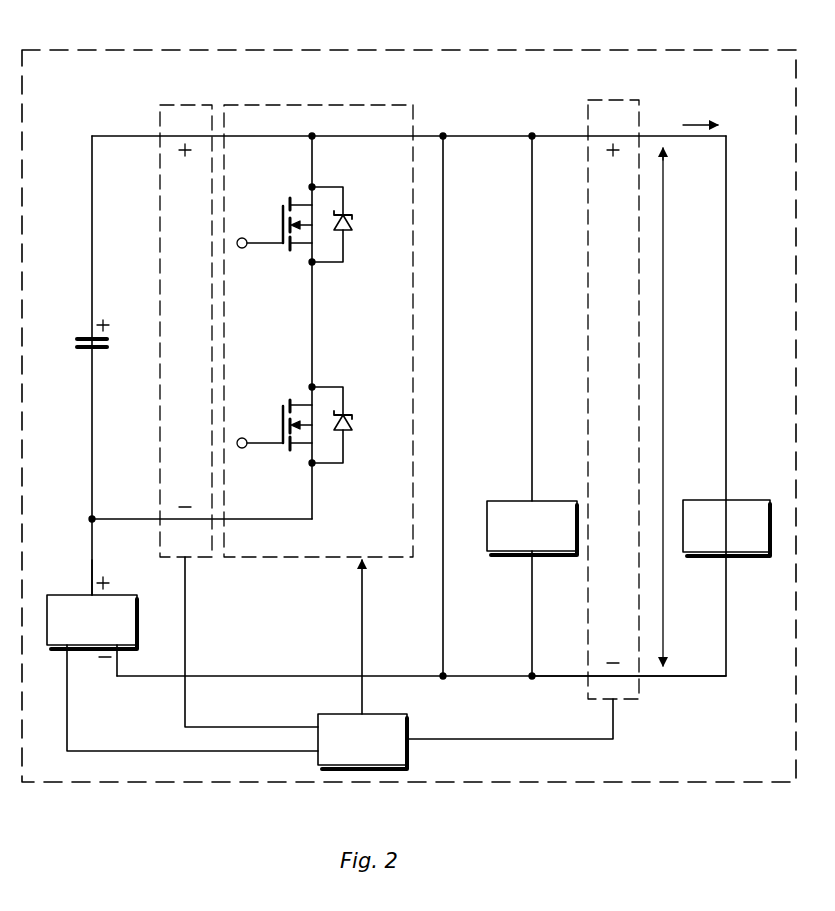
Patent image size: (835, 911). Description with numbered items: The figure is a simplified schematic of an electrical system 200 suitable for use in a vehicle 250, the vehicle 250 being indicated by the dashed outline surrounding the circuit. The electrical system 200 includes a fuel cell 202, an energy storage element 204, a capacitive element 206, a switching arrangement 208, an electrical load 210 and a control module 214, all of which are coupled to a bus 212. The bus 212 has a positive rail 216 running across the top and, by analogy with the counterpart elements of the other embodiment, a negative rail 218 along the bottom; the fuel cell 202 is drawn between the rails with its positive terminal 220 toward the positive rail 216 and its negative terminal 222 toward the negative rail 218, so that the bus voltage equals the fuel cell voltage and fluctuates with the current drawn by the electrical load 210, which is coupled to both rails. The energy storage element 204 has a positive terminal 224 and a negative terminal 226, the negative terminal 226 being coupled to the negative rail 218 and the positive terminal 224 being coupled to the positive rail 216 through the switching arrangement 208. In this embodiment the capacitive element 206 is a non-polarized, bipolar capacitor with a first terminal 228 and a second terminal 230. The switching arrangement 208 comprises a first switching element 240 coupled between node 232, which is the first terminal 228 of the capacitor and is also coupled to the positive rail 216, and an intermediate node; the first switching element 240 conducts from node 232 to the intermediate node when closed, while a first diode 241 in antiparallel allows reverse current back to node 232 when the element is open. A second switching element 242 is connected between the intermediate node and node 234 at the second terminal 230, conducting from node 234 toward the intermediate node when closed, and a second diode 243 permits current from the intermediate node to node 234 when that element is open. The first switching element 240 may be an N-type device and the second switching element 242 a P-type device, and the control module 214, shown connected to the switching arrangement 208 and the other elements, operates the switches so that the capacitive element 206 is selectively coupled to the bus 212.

The electrical system 200 is at (472, 116).
The fuel cell 202 is at (530, 406).
The energy storage element 204 is at (171, 646).
The capacitive element 206 is at (68, 341).
The switching arrangement 208 is at (160, 213).
The electrical load 210 is at (746, 500).
The bus 212 is at (668, 407).
The control module 214 is at (318, 714).
The positive rail 216 is at (690, 138).
The negative output conductor 218 is at (694, 676).
The conductor 220 is at (540, 500).
The conductor 222 is at (535, 553).
The charger positive conductor 224 is at (88, 594).
The charger negative conductor 226 is at (63, 648).
The first terminal 228 is at (92, 337).
The second terminal 230 is at (91, 349).
The node 232 is at (353, 135).
The node 234 is at (288, 520).
The first switching element 240 is at (283, 212).
The first diode 241 is at (346, 212).
The second switching element 242 is at (283, 408).
The second diode 243 is at (346, 412).
The vehicle 250 is at (631, 48).